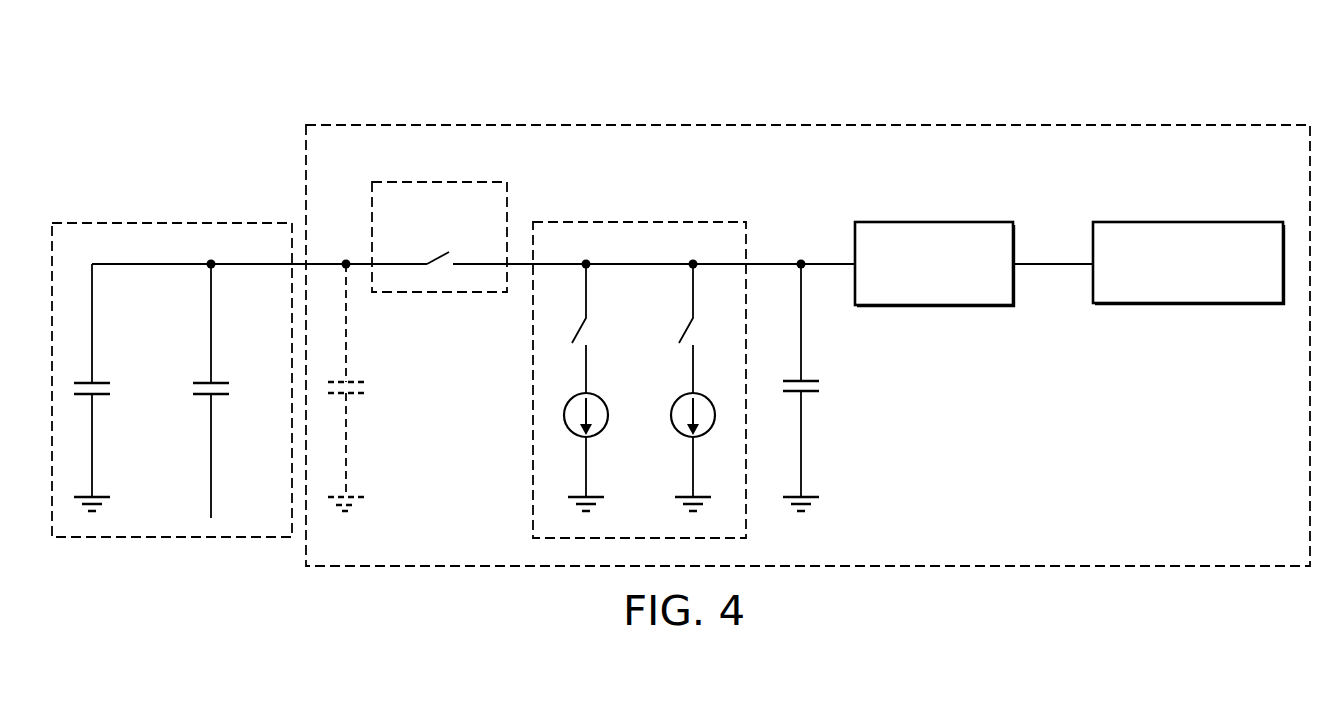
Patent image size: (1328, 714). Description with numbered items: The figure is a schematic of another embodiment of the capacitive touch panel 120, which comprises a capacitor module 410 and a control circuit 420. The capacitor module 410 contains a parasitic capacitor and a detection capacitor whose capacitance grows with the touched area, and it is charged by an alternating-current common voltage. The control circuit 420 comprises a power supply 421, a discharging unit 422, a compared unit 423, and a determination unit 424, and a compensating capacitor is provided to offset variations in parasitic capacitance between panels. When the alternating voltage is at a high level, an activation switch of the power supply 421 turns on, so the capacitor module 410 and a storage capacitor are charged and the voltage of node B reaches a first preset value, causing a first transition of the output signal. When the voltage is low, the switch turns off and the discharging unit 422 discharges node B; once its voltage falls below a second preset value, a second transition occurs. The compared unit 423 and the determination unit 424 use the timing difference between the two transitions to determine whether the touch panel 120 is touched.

The touch panel 120 is at (159, 97).
The capacitor module 410 is at (198, 223).
The control circuit 420 is at (1107, 125).
The power supply 421 is at (438, 182).
The discharging unit 422 is at (573, 222).
The compared unit 423 is at (935, 222).
The determination unit 424 is at (1202, 222).
The node B is at (693, 262).